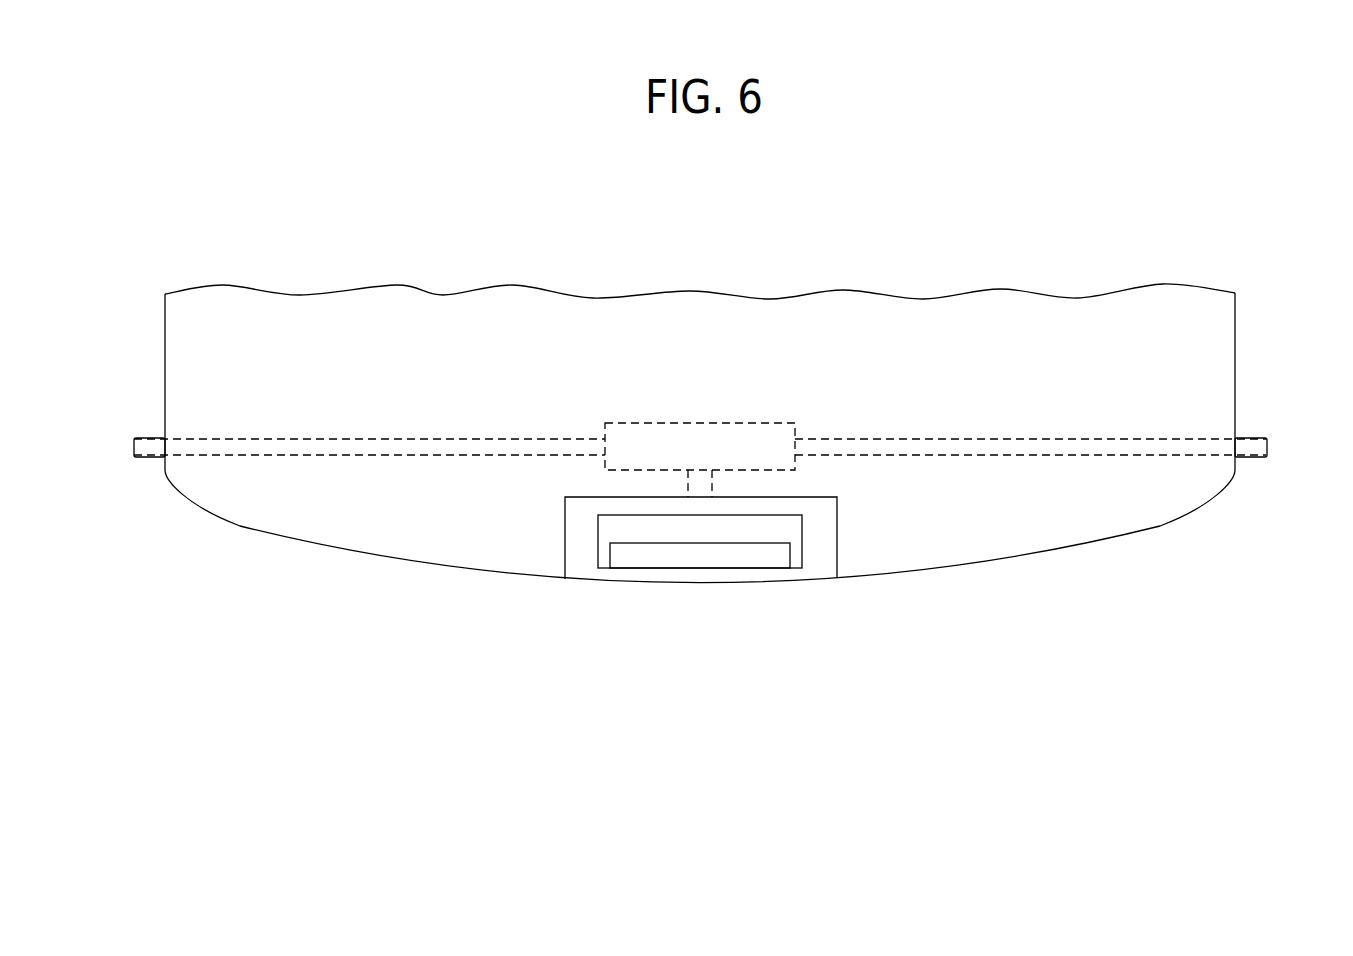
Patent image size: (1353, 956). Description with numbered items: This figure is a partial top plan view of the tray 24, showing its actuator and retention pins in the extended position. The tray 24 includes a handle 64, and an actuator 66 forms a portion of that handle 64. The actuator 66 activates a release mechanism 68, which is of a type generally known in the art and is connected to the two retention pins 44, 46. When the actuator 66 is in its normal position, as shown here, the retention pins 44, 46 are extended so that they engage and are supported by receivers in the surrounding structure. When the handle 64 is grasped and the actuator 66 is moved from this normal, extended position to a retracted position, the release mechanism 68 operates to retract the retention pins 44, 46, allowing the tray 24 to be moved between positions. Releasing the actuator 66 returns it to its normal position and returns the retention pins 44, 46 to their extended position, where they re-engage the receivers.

The tray 24 is at (1078, 547).
The retention pin 44 is at (146, 457).
The retention pin 46 is at (1253, 457).
The handle 64 is at (838, 548).
The actuator 66 is at (638, 562).
The release mechanism 68 is at (663, 423).